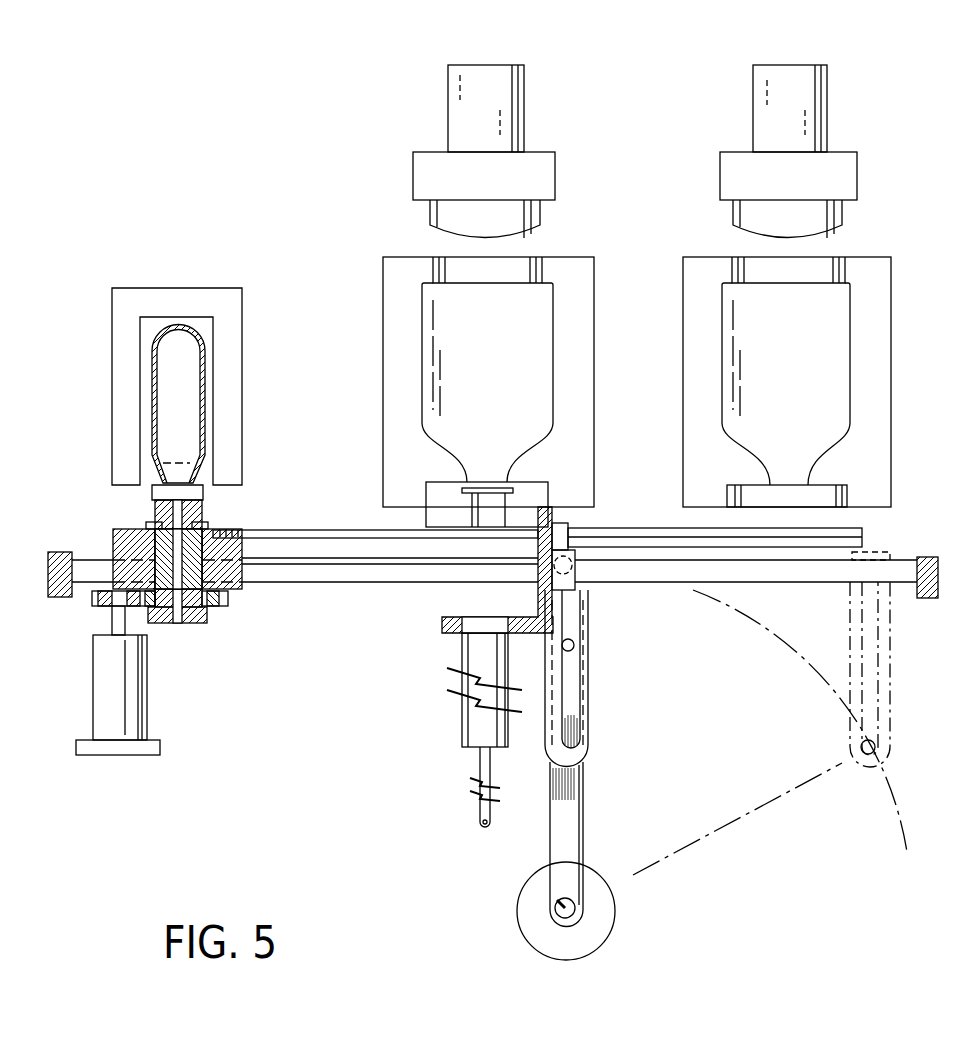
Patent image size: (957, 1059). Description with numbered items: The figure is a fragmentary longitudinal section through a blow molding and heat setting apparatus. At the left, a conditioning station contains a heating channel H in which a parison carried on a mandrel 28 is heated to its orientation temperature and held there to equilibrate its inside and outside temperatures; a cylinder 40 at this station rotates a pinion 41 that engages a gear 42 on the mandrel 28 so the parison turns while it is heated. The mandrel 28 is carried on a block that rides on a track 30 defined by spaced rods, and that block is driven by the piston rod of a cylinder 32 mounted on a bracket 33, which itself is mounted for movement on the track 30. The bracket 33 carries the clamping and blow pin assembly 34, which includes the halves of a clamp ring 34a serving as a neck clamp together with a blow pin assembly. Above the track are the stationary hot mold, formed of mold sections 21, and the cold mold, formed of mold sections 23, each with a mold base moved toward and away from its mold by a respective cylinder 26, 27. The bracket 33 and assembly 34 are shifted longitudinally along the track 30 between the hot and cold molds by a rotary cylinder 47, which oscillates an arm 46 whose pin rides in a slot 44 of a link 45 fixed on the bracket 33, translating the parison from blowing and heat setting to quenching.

The heating channel H is at (122, 317).
The mold sections 21 is at (390, 278).
The mold sections 23 is at (872, 270).
The cylinder 26 is at (470, 110).
The cylinder 27 is at (803, 117).
The mandrel 28 is at (155, 508).
The track 30 is at (332, 570).
The cylinder 32 is at (383, 538).
The bracket 33 is at (442, 620).
The clamping and blow pin assembly 34 is at (458, 713).
The clamp ring 34a is at (480, 722).
The cylinder 40 is at (117, 697).
The pinion 41 is at (90, 597).
The gear 42 is at (218, 593).
The slot 44 is at (570, 650).
The link 45 is at (588, 718).
The arm 46 is at (573, 825).
The rotary cylinder 47 is at (597, 917).